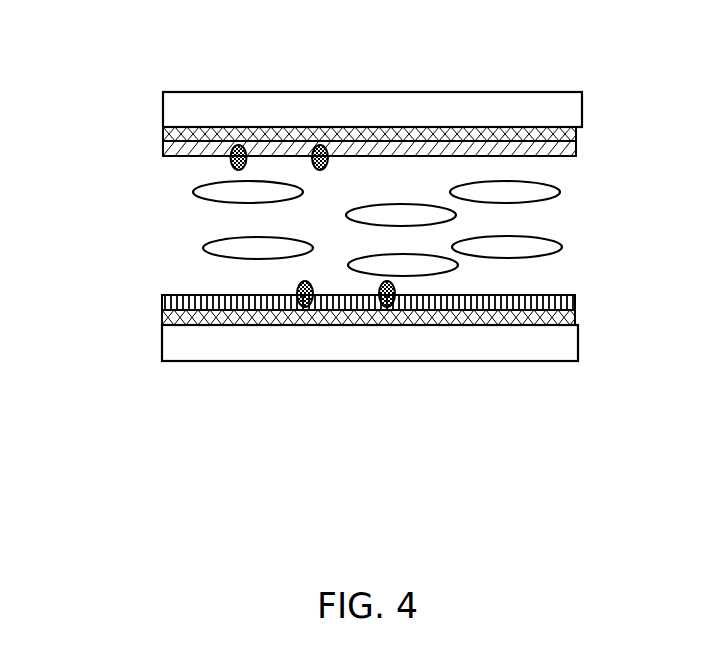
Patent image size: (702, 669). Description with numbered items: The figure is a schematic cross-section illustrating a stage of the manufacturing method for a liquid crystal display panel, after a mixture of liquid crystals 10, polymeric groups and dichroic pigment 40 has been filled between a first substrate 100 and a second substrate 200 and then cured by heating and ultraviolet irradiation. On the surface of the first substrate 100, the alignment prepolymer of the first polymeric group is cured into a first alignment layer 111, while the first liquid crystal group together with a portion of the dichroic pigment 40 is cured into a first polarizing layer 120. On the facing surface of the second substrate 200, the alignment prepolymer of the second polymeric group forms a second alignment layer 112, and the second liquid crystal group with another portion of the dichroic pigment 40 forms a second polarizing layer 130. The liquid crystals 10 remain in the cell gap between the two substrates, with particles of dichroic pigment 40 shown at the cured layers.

The second substrate 200 is at (182, 107).
The first substrate 100 is at (182, 337).
The liquid crystals 10 is at (225, 190).
The dichroic pigment 40 is at (238, 145).
The second alignment layer 112 is at (384, 135).
The first alignment layer 111 is at (495, 318).
The second polarizing layer 130 is at (462, 150).
The first polarizing layer 120 is at (428, 298).